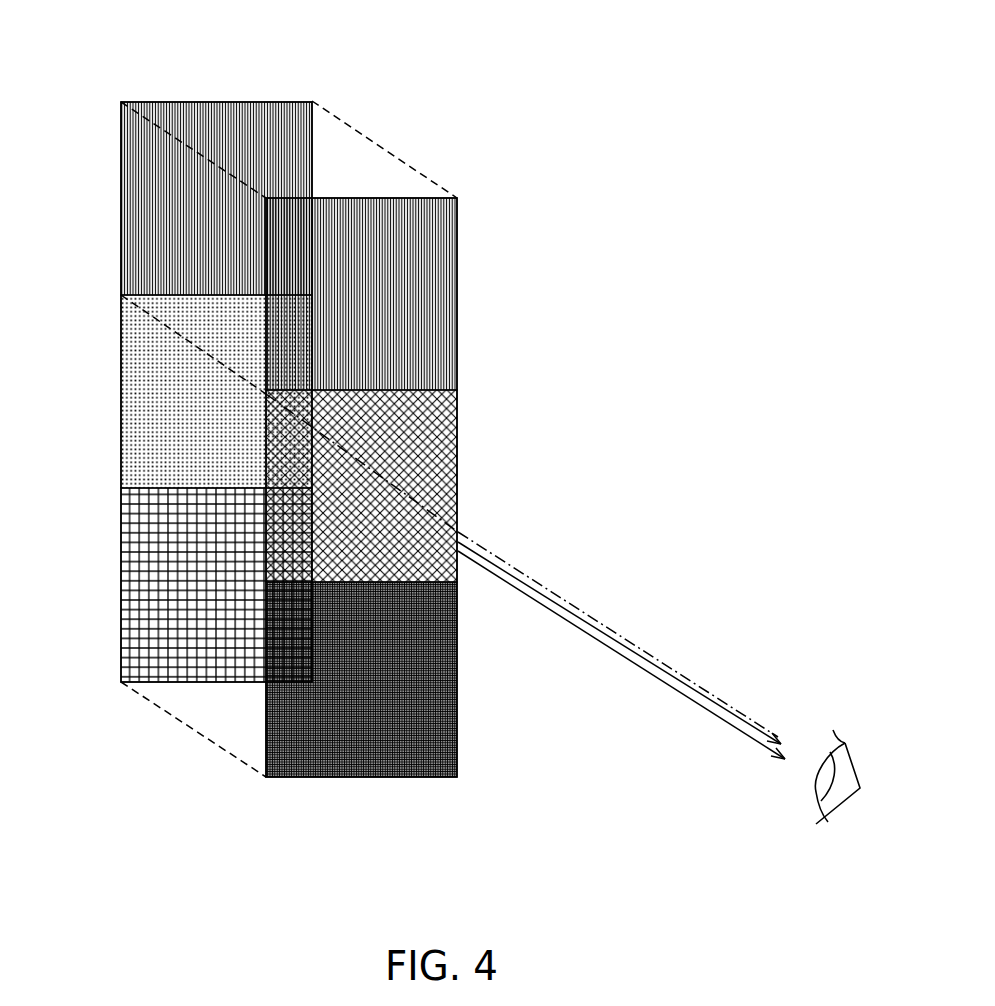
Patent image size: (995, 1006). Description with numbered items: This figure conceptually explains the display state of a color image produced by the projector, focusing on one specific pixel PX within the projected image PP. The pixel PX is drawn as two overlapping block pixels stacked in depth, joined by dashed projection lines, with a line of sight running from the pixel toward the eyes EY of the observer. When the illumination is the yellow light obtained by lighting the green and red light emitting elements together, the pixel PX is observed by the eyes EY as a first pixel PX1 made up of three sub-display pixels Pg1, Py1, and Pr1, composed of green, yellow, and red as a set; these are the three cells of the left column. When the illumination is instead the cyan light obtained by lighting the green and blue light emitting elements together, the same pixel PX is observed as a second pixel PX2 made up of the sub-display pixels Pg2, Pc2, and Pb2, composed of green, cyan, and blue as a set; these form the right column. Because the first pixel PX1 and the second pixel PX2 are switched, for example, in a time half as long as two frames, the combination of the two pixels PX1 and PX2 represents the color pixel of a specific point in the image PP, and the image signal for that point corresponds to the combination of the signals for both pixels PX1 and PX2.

The image PP is at (545, 79).
The specific pixel PX is at (492, 206).
The first pixel PX1 is at (262, 118).
The second pixel PX2 is at (406, 210).
The sub-display pixel Pg1 is at (133, 200).
The sub-display pixel Py1 is at (135, 388).
The sub-display pixel Pr1 is at (137, 583).
The sub-display pixel Pg2 is at (457, 296).
The sub-display pixel Pc2 is at (457, 490).
The sub-display pixel Pb2 is at (458, 681).
The eyes of the observer EY is at (835, 813).